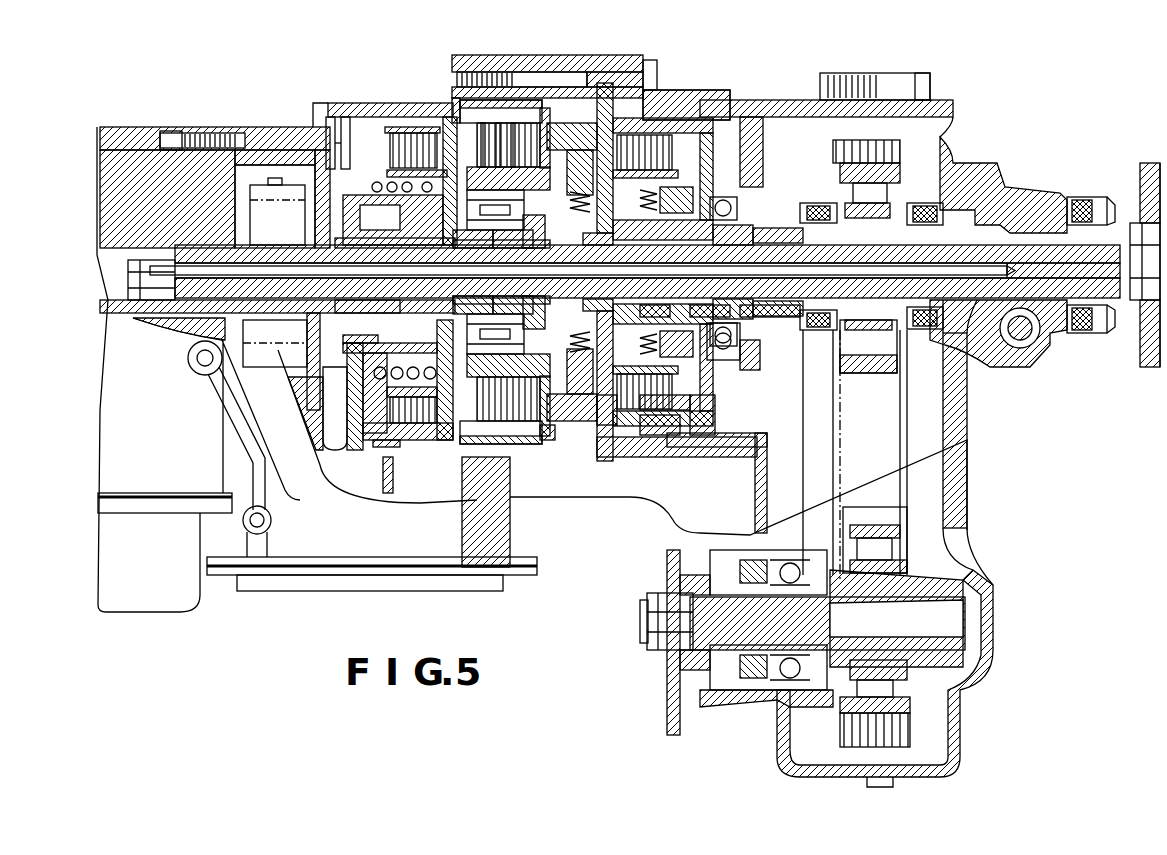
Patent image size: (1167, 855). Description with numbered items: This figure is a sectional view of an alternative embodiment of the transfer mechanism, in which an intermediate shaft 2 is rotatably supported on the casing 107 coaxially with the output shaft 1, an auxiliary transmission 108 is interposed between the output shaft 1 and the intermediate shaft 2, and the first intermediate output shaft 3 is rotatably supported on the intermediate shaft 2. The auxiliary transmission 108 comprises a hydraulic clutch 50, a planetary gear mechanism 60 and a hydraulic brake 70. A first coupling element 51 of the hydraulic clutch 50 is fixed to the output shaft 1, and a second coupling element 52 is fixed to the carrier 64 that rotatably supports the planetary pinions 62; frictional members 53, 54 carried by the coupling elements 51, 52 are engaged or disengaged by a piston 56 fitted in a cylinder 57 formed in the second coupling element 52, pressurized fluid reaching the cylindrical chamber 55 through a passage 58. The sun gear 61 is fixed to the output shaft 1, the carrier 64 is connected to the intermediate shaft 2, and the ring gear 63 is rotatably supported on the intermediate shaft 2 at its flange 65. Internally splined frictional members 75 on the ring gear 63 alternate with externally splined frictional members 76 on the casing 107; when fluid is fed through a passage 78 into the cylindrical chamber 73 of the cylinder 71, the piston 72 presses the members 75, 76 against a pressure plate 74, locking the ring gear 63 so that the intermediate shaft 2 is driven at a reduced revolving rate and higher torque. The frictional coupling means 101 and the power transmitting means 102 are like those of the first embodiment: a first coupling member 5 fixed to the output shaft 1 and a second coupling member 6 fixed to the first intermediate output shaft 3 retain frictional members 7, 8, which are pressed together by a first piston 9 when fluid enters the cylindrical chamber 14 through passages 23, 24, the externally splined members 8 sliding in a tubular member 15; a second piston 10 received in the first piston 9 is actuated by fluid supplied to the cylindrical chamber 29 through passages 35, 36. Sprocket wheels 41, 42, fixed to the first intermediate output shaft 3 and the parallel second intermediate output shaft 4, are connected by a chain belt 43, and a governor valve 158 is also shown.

The output shaft 1 is at (172, 253).
The intermediate shaft 2 is at (1067, 250).
The first intermediate output shaft 3 is at (1005, 218).
The second intermediate output shaft 4 is at (965, 582).
The first coupling member 5 is at (644, 261).
The second coupling member 6 is at (764, 412).
The frictional members 7 is at (605, 447).
The frictional members 8 is at (640, 445).
The first piston 9 is at (690, 440).
The second piston 10 is at (718, 378).
The cylindrical chamber 14 is at (715, 402).
The tubular member 15 is at (665, 442).
The passage 23 is at (770, 318).
The passage 24 is at (700, 320).
The cylindrical chamber 29 is at (650, 320).
The passage 35 is at (735, 243).
The passage 36 is at (688, 243).
The sprocket wheel 41 is at (893, 197).
The sprocket wheel 42 is at (910, 535).
The chain belt 43 is at (885, 141).
The hydraulic clutch 50 is at (378, 108).
The first coupling element 51 is at (428, 248).
The second coupling element 52 is at (380, 112).
The frictional members 53 is at (414, 130).
The frictional members 54 is at (392, 125).
The cylindrical chamber 55 is at (372, 185).
The piston 56 is at (372, 178).
The cylinder 57 is at (380, 220).
The passage 58 is at (392, 338).
The planetary gear mechanism 60 is at (520, 125).
The sun gear 61 is at (468, 248).
The planetary pinions 62 is at (503, 312).
The ring gear 63 is at (500, 210).
The carrier 64 is at (503, 248).
The flange 65 is at (545, 235).
The hydraulic brake 70 is at (580, 115).
The cylinder 71 is at (596, 246).
The piston 72 is at (567, 125).
The cylindrical chamber 73 is at (613, 120).
The pressure plate 74 is at (481, 125).
The internally splined frictional members 75 is at (496, 125).
The externally splined frictional members 76 is at (511, 125).
The passage 78 is at (548, 440).
The frictional coupling means 101 is at (693, 115).
The power transmitting means 102 is at (949, 138).
The casing 107 is at (545, 110).
The auxiliary transmission 108 is at (450, 112).
The governor valve 158 is at (250, 220).